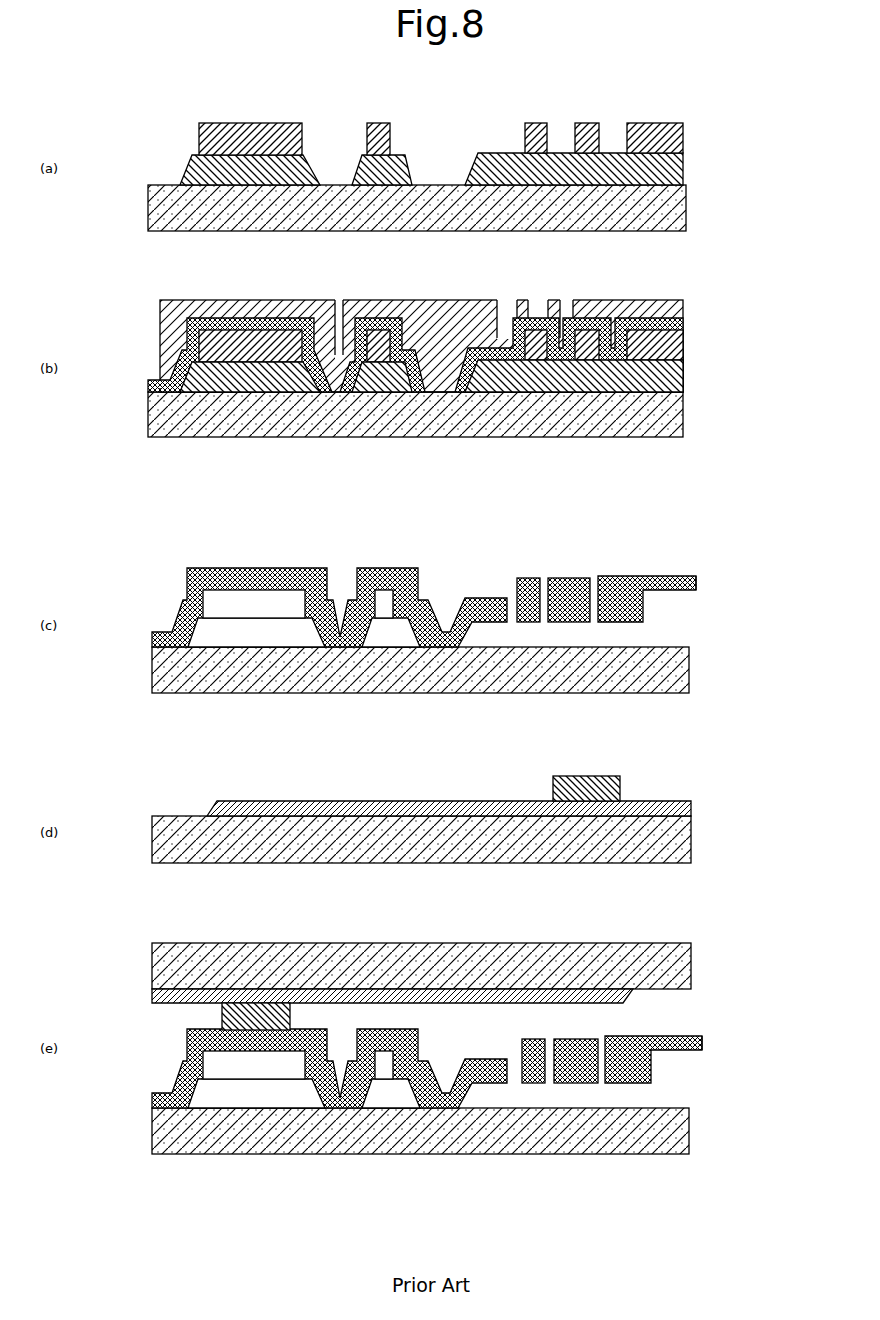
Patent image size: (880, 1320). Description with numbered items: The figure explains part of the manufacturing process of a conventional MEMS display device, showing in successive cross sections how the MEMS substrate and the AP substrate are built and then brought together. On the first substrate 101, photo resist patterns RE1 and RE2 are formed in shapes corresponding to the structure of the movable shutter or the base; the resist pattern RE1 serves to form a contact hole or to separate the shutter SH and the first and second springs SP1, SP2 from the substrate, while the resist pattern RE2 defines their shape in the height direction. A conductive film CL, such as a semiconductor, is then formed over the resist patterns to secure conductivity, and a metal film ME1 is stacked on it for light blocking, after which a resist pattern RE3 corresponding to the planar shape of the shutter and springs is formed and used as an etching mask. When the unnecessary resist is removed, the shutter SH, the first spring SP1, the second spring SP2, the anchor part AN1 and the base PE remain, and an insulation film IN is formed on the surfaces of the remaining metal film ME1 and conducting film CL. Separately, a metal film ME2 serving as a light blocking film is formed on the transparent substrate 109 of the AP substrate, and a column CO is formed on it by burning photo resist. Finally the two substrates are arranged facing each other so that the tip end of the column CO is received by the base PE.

The first substrate SUB1 101 is at (686, 206).
The second substrate SUB2 109 is at (691, 836).
The resist pattern RE1 is at (683, 176).
The resist pattern RE2 is at (683, 137).
The resist pattern RE3 is at (683, 306).
The metal film ME1 is at (683, 322).
The conducting film CL is at (683, 333).
The base PE is at (250, 556).
The anchor part AN1 is at (342, 565).
The first spring SP1 is at (578, 572).
The second spring SP2 is at (557, 572).
The shutter SH is at (665, 570).
The insulation film IN is at (698, 592).
The metal film ME2 is at (405, 800).
The column CO is at (617, 776).